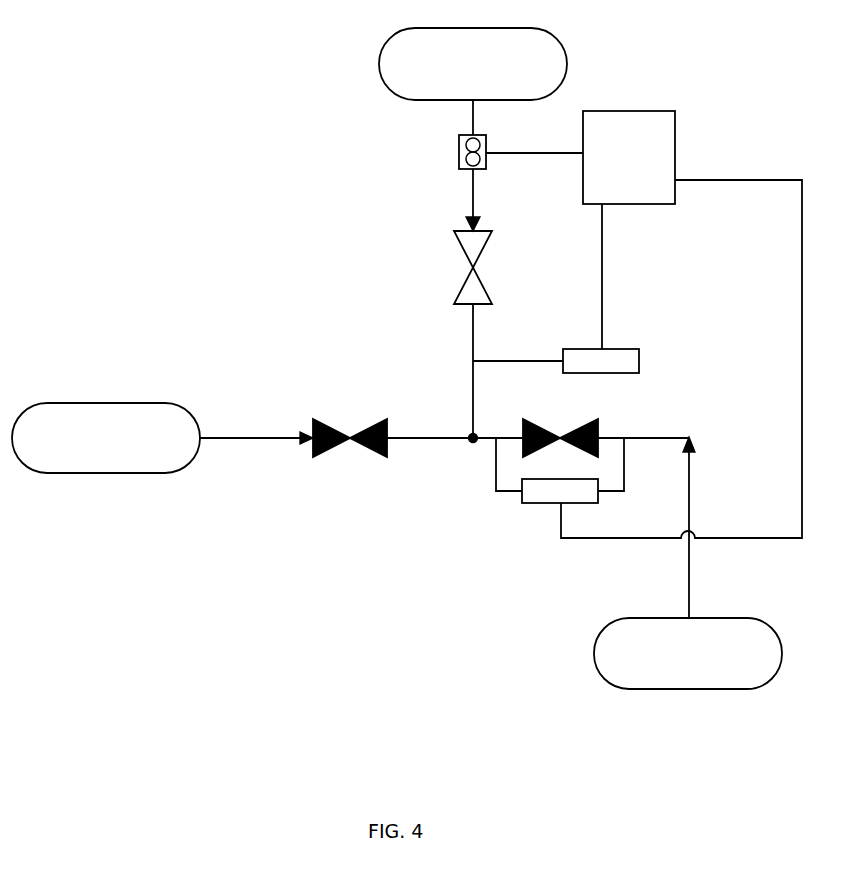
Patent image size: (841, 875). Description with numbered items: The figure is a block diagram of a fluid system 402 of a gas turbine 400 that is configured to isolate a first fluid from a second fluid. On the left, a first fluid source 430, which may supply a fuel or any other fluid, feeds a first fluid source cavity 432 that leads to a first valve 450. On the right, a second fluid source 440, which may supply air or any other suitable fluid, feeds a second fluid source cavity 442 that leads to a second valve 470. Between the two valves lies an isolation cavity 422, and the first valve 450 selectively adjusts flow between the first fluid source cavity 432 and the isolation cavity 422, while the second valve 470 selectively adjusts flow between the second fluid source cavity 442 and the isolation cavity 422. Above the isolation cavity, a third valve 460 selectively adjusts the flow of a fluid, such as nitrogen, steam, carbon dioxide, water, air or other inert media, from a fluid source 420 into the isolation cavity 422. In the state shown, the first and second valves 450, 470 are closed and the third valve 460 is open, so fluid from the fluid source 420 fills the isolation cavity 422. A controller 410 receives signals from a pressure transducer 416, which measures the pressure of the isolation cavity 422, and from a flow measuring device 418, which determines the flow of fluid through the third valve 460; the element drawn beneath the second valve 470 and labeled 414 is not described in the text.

The gas turbine 400 is at (185, 151).
The fluid system 402 is at (417, 388).
The controller 410 is at (683, 109).
The flow sensor 414 is at (523, 502).
The pressure transducer 416 is at (639, 361).
The flow measuring device 418 is at (457, 153).
The fluid source 420 is at (473, 81).
The isolation cavity 422 is at (474, 335).
The first fluid source 430 is at (106, 438).
The first fluid source cavity 432 is at (247, 439).
The second fluid source 440 is at (688, 653).
The second fluid source cavity 442 is at (691, 487).
The first valve 450 is at (317, 420).
The third valve 460 is at (455, 231).
The second valve 470 is at (595, 424).